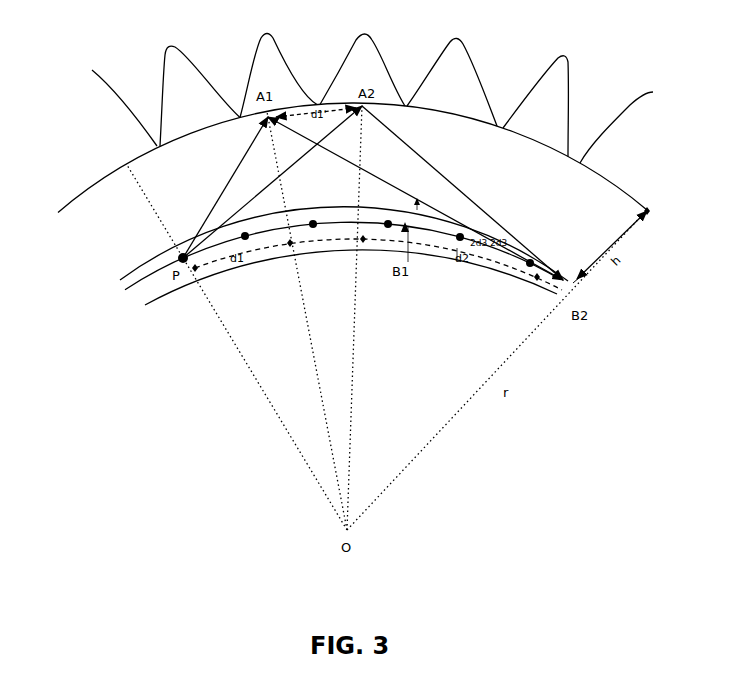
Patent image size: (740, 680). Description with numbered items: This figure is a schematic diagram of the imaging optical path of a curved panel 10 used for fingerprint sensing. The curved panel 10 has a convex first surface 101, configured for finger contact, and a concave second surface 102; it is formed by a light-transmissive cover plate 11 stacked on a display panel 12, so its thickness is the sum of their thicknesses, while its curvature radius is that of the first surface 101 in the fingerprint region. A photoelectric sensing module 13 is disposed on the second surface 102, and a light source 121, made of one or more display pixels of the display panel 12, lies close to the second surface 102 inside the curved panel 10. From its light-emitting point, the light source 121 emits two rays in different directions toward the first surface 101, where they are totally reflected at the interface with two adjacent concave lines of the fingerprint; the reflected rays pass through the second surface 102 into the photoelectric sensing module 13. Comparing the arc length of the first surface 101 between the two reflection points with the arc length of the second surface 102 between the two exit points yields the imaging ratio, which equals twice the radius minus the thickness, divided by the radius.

The curved panel 10 is at (80, 293).
The light-transmissive cover plate 11 is at (107, 215).
The first surface 101 is at (110, 174).
The second surface 102 is at (160, 273).
The display panel 12 is at (125, 289).
The light source 121 is at (181, 256).
The photoelectric sensing module 13 is at (142, 304).